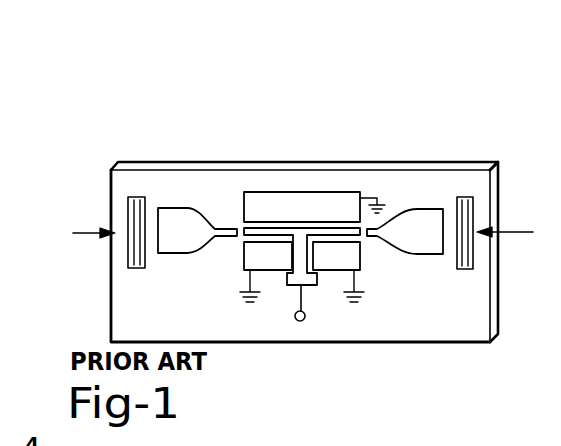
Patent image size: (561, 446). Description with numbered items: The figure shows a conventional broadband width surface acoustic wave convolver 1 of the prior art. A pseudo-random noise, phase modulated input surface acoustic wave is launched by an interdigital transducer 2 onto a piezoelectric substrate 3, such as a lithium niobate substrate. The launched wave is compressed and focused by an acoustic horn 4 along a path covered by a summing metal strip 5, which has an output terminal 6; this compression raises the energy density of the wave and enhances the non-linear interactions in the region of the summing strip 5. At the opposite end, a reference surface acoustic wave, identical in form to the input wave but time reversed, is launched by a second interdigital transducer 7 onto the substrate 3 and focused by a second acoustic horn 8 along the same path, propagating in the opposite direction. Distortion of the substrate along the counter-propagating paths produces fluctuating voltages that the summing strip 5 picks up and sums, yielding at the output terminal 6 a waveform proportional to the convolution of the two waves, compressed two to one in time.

The surface acoustic wave convolver 1 is at (274, 163).
The interdigital transducer 2 is at (133, 197).
The piezoelectric substrate 3 is at (495, 315).
The acoustic horn 4 is at (182, 208).
The summing metal strip 5 is at (314, 228).
The output terminal 6 is at (305, 318).
The interdigital transducer 7 is at (463, 197).
The acoustic horn 8 is at (418, 208).